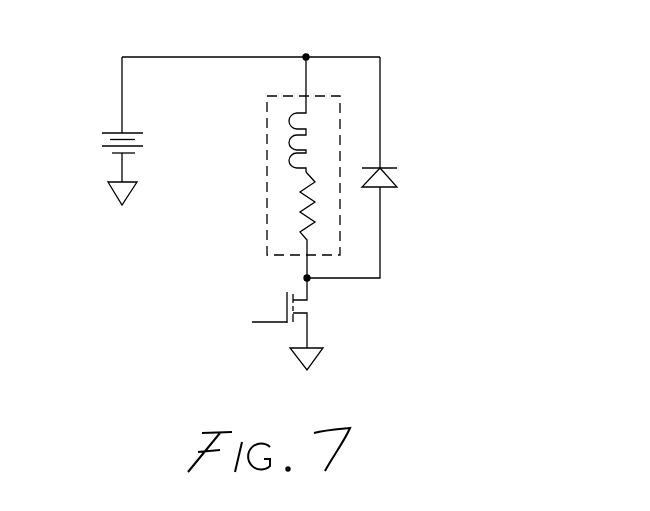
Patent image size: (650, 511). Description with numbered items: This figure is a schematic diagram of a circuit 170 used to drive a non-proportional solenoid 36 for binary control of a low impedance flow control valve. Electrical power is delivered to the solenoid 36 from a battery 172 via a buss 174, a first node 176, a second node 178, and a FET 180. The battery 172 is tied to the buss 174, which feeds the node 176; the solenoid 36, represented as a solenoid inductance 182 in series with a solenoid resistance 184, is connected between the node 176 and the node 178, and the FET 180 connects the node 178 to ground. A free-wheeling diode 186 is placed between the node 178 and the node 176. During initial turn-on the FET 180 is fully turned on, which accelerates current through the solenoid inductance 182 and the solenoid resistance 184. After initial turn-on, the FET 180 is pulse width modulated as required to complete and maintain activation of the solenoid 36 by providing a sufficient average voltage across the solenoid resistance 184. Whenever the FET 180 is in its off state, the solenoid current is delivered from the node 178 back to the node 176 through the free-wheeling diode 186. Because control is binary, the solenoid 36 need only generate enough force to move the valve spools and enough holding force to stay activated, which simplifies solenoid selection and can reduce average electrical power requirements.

The circuit 170 is at (410, 140).
The battery 172 is at (112, 151).
The buss 174 is at (169, 57).
The node 176 is at (308, 56).
The node 178 is at (310, 280).
The FET 180 is at (267, 319).
The solenoid inductance 182 is at (290, 141).
The solenoid resistance 184 is at (303, 210).
The free-wheeling diode 186 is at (385, 190).
The solenoid 36 is at (268, 221).